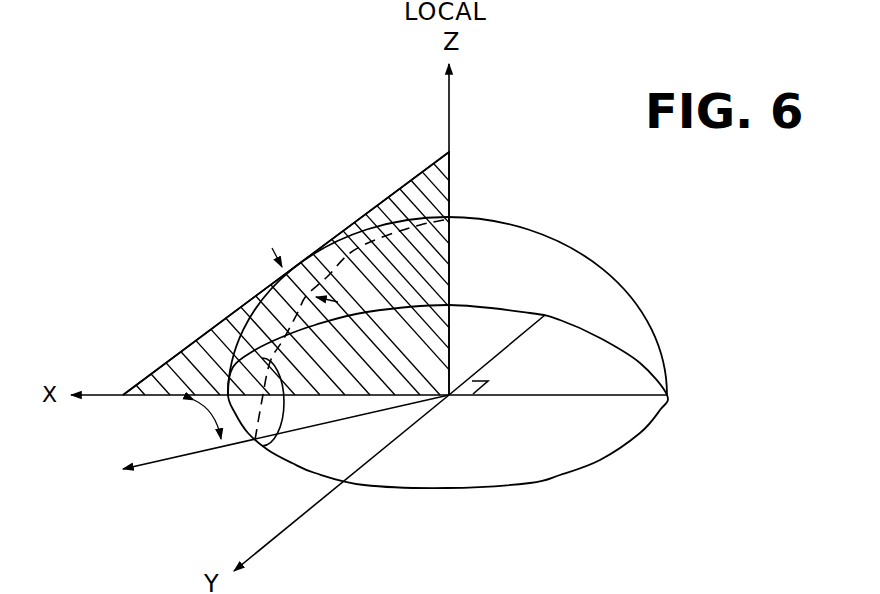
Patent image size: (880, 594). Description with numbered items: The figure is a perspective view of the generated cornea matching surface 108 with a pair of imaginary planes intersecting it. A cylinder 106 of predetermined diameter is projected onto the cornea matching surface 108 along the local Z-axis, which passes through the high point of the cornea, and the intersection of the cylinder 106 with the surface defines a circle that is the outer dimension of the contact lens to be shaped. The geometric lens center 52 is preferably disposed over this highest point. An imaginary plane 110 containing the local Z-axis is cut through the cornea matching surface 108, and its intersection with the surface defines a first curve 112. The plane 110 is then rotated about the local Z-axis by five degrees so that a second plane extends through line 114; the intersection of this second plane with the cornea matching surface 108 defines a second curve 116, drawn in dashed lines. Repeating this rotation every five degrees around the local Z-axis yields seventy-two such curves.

The geometric lens center 52 is at (462, 214).
The cylinder 106 is at (458, 362).
The cornea matching surface 108 is at (371, 245).
The plane 110 is at (180, 352).
The first curve 112 is at (265, 328).
The line 114 is at (177, 457).
The second curve 116 is at (270, 445).